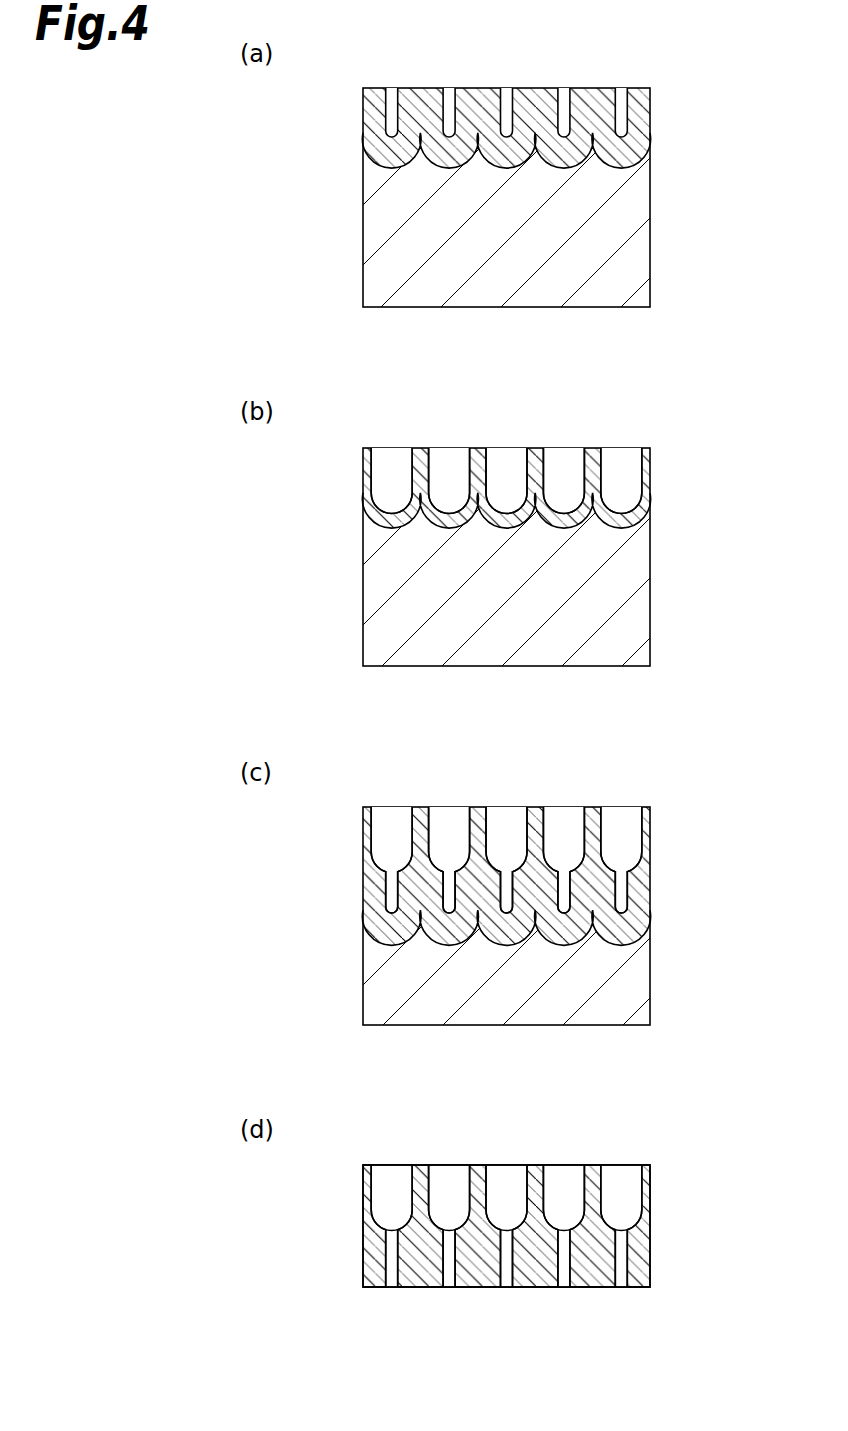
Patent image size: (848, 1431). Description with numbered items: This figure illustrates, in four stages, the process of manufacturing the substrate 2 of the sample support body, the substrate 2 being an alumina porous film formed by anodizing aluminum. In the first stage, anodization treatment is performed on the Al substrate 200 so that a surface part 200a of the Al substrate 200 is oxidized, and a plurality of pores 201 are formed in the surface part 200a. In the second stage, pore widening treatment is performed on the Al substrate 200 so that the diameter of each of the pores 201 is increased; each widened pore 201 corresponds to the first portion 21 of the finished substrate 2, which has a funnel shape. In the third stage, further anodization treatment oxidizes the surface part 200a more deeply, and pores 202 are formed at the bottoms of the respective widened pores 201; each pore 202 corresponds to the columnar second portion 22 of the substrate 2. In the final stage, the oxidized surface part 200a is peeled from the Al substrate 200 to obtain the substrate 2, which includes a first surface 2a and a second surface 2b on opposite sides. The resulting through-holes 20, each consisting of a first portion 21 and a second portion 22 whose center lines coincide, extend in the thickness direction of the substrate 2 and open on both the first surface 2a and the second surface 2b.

The Al substrate 200 is at (643, 242).
The surface part 200a is at (643, 112).
The pores 201 is at (447, 107).
The pores 202 is at (453, 887).
The first portion 21 is at (468, 1180).
The second portion 22 is at (446, 1288).
The through-holes 20 is at (506, 1226).
The substrate 2 is at (643, 1246).
The first surface 2a is at (382, 1166).
The second surface 2b is at (373, 1288).